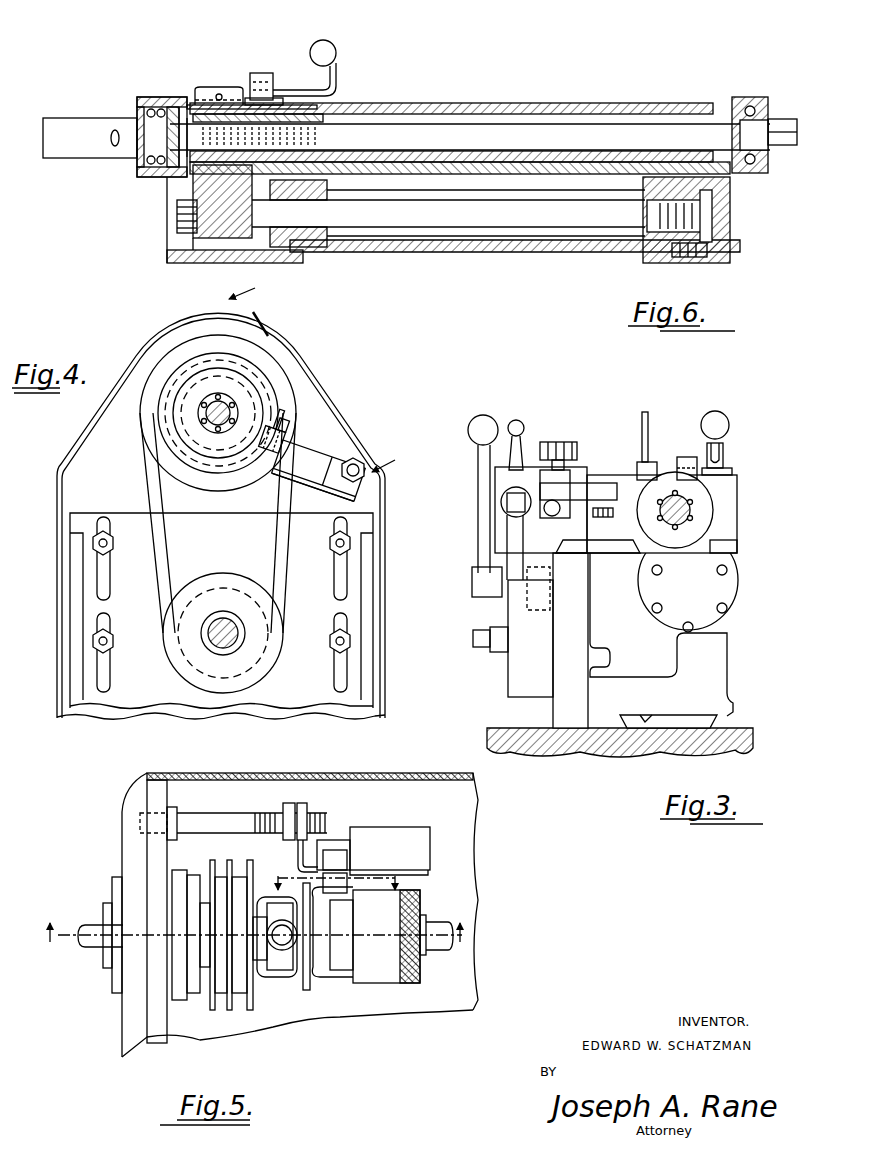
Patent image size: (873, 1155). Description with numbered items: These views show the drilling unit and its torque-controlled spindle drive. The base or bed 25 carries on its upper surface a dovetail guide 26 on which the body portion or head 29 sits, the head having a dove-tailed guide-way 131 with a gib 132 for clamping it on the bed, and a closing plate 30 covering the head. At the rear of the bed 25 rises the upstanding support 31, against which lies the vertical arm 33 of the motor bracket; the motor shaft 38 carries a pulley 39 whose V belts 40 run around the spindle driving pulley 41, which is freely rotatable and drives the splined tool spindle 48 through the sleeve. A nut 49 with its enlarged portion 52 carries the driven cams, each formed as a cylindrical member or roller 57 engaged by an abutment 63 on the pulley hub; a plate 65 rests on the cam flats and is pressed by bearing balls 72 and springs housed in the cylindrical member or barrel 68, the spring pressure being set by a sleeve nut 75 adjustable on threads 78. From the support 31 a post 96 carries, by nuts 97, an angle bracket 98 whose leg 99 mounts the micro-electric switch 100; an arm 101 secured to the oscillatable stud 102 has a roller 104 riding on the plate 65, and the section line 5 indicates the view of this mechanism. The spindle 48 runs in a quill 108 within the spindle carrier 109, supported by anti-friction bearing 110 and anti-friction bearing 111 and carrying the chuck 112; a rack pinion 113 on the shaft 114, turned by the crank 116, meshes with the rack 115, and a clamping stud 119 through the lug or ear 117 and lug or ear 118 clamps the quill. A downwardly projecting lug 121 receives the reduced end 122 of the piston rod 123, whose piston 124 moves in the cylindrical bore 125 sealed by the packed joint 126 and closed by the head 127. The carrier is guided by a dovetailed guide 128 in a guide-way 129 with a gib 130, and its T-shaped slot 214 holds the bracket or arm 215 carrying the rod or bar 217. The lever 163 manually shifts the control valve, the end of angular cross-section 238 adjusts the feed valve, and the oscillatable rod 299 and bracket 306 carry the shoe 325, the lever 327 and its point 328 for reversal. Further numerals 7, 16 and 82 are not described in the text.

In FIG. 4, the line 5— 5 is at (321, 375).
In FIG. 5, the section line 7- 7 is at (258, 942).
In FIG. 5, the section line 16- 16 is at (334, 882).
In FIG. 3, the base or bed 25 is at (558, 753).
In FIG. 3, the dovetail guide 26 is at (667, 730).
In FIG. 6, the body portion or head 29 is at (395, 253).
In FIG. 3, the body portion or head 29 is at (717, 638).
In FIG. 3, the closing plate 30 is at (588, 694).
In FIG. 4, the upstanding support 31 is at (85, 462).
In FIG. 5, the upstanding support 31 is at (127, 855).
In FIG. 4, the vertical arm 33 is at (120, 512).
In FIG. 4, the motor shaft 38 is at (237, 635).
In FIG. 4, the pulley 39 is at (213, 580).
In FIG. 4, the V belts 40 is at (163, 528).
In FIG. 5, the V belts 40 is at (222, 998).
In FIG. 4, the spindle driving pulley 41 is at (258, 352).
In FIG. 5, the spindle driving pulley 41 is at (210, 873).
In FIG. 6, the tool spindle 48 is at (633, 132).
In FIG. 4, the tool spindle 48 is at (229, 390).
In FIG. 3, the tool spindle 48 is at (693, 508).
In FIG. 5, the tool spindle 48 is at (92, 944).
In FIG. 6, the nut 49 is at (718, 128).
In FIG. 4, the nut 49 is at (214, 423).
In FIG. 5, the enlarged portion 52 is at (277, 977).
In FIG. 5, the cylindrical member or roller 57 is at (297, 977).
In FIG. 5, the abutment 63 is at (260, 960).
In FIG. 4, the plate 65 is at (258, 378).
In FIG. 5, the plate 65 is at (308, 990).
In FIG. 5, the cylindrical member or barrel 68 is at (342, 967).
In FIG. 5, the bearing ball 72 is at (300, 960).
In FIG. 5, the sleeve nut 75 is at (380, 967).
In FIG. 5, the threads 78 is at (430, 952).
In FIG. 5, the spring 82 is at (345, 928).
In FIG. 4, the post 96 is at (367, 458).
In FIG. 5, the post 96 is at (207, 817).
In FIG. 4, the nuts 97 is at (357, 458).
In FIG. 5, the nuts 97 is at (285, 810).
In FIG. 5, the angle bracket 98 is at (298, 860).
In FIG. 4, the leg 99 is at (368, 493).
In FIG. 5, the leg 99 is at (430, 874).
In FIG. 4, the micro-electric switch 100 is at (320, 470).
In FIG. 5, the micro-electric switch 100 is at (430, 845).
In FIG. 4, the arm 101 is at (282, 430).
In FIG. 5, the arm 101 is at (348, 896).
In FIG. 4, the oscillatable stud 102 is at (292, 455).
In FIG. 5, the oscillatable stud 102 is at (342, 870).
In FIG. 4, the roller 104 is at (272, 415).
In FIG. 5, the roller 104 is at (322, 900).
In FIG. 6, the quill 108 is at (398, 112).
In FIG. 6, the spindle carrier 109 is at (588, 85).
In FIG. 3, the spindle carrier 109 is at (730, 532).
In FIG. 6, the anti-friction bearing 110 is at (768, 100).
In FIG. 6, the anti-friction bearing 111 is at (155, 178).
In FIG. 6, the chuck 112 is at (73, 157).
In FIG. 6, the rack pinion 113 is at (295, 128).
In FIG. 6, the shaft 114 is at (288, 54).
In FIG. 3, the shaft 114 is at (725, 468).
In FIG. 6, the rack 115 is at (322, 133).
In FIG. 6, the crank 116 is at (337, 50).
In FIG. 3, the crank 116 is at (718, 440).
In FIG. 3, the lug or ear 117 is at (656, 472).
In FIG. 6, the lug or ear 118 is at (236, 90).
In FIG. 3, the lug or ear 118 is at (688, 457).
In FIG. 6, the clamping stud 119 is at (216, 92).
In FIG. 3, the clamping stud 119 is at (650, 462).
In FIG. 6, the downwardly projecting lug 121 is at (200, 187).
In FIG. 6, the reduced end 122 is at (177, 220).
In FIG. 6, the piston rod 123 is at (550, 220).
In FIG. 6, the piston 124 is at (650, 232).
In FIG. 6, the cylindrical bore 125 is at (470, 240).
In FIG. 6, the packed joint 126 is at (308, 250).
In FIG. 6, the head 127 is at (732, 230).
In FIG. 3, the head 127 is at (738, 585).
In FIG. 3, the dovetailed guide 128 is at (703, 547).
In FIG. 3, the guide-way 129 is at (735, 545).
In FIG. 3, the gib 130 is at (630, 548).
In FIG. 3, the dove-tailed guide-way 131 is at (722, 718).
In FIG. 3, the gib 132 is at (618, 742).
In FIG. 3, the lever 163 is at (480, 537).
In FIG. 3, the T-shaped slot 214 is at (611, 512).
In FIG. 3, the bracket or arm 215 is at (613, 487).
In FIG. 3, the rod or bar 217 is at (556, 503).
In FIG. 3, the end of angular cross-section 238 is at (478, 650).
In FIG. 3, the oscillatable rod 299 is at (507, 502).
In FIG. 3, the bracket 306 is at (507, 553).
In FIG. 3, the shoe 325 is at (554, 442).
In FIG. 3, the lever 327 is at (541, 443).
In FIG. 3, the point 328 is at (578, 443).